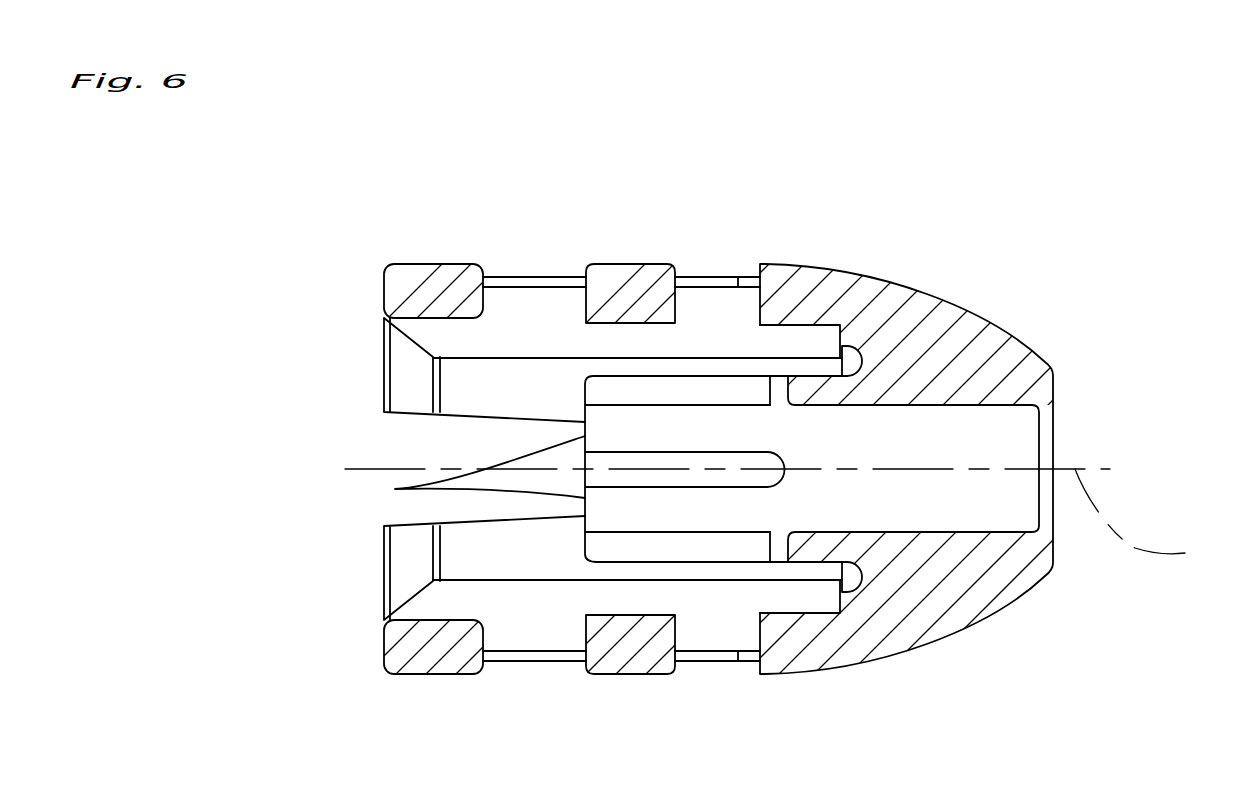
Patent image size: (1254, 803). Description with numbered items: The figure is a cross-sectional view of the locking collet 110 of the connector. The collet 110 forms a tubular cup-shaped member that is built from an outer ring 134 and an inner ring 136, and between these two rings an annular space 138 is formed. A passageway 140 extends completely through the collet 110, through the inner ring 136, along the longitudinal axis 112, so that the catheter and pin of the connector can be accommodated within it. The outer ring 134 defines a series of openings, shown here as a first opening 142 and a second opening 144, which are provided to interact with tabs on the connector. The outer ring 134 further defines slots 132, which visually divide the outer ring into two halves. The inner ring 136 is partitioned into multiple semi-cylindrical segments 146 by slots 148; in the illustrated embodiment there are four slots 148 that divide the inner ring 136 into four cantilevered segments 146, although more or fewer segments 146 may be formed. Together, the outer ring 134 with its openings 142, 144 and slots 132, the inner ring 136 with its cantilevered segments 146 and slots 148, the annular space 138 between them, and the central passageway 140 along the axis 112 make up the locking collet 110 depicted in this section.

The collet 110 is at (927, 295).
The longitudinal axis 112 is at (1153, 518).
The slots 132 is at (402, 442).
The outer ring 134 is at (408, 263).
The inner ring 136 is at (612, 562).
The annular space 138 is at (588, 342).
The passageway 140 is at (1013, 440).
The first opening 142 is at (525, 278).
The second opening 144 is at (710, 277).
The semi-cylindrical segments 146 is at (395, 489).
The slots 148 is at (713, 470).